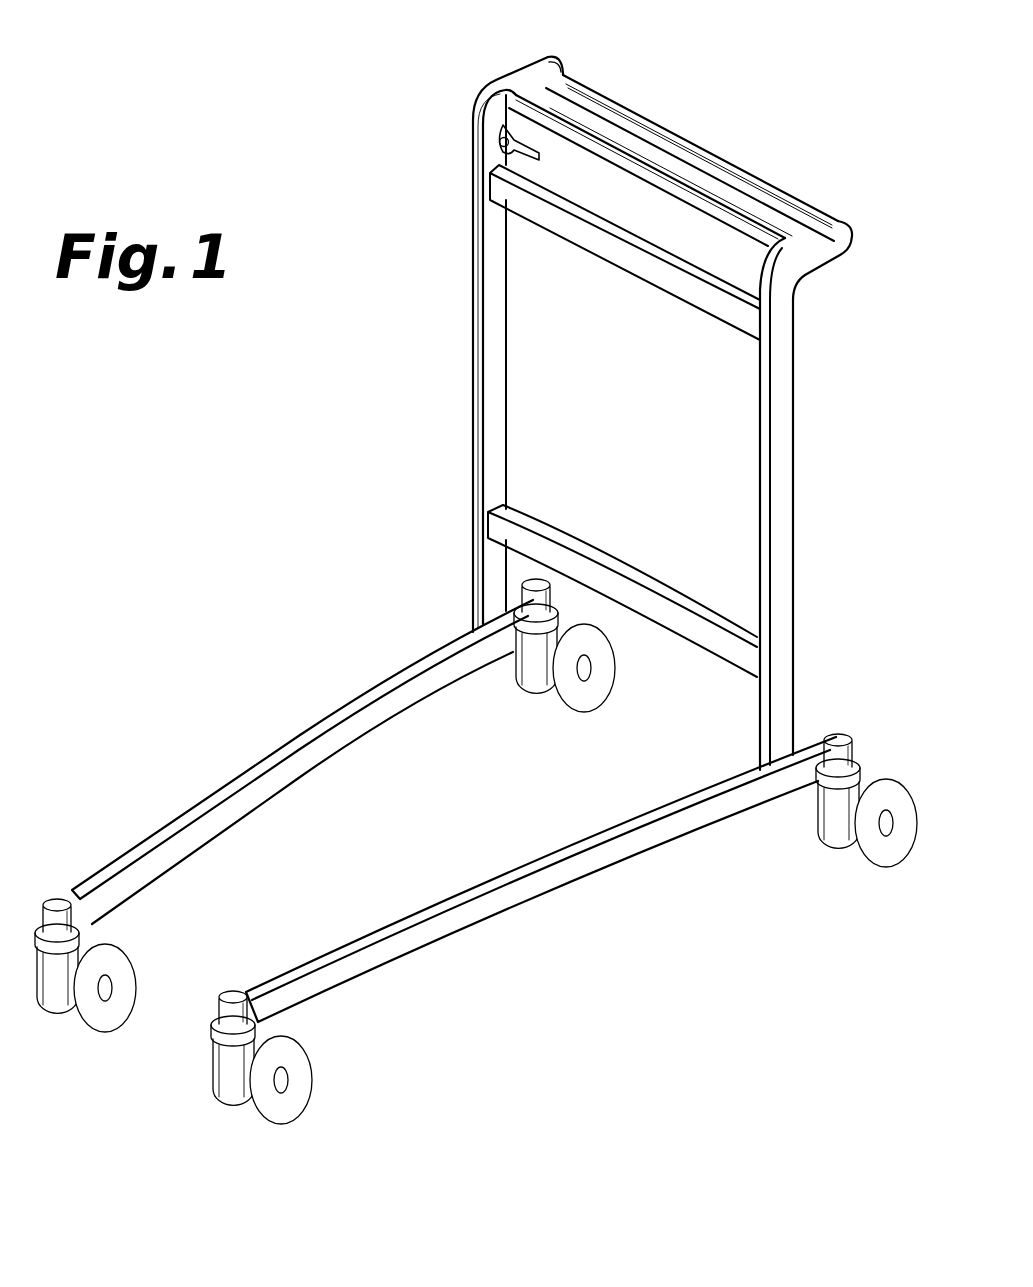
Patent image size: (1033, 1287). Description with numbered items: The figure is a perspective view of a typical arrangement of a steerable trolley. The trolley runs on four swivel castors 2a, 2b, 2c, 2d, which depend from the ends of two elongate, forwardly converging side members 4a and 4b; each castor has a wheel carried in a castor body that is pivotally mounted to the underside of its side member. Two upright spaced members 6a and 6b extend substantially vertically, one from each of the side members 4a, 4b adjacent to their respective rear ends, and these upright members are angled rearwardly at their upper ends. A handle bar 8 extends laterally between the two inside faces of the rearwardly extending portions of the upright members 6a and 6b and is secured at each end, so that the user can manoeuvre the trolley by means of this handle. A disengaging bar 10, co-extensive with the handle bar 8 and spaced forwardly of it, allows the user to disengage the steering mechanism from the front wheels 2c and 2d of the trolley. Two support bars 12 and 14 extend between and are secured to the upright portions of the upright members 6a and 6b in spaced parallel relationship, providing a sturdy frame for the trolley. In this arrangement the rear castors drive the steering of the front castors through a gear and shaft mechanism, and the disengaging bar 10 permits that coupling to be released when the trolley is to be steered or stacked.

The swivel castor 2a is at (863, 847).
The swivel castor 2b is at (602, 673).
The swivel castor 2c is at (118, 970).
The swivel castor 2d is at (298, 1087).
The side member 4a is at (483, 915).
The side member 4b is at (293, 775).
The upright spaced member 6a is at (790, 488).
The upright spaced member 6b is at (500, 462).
The handle bar 8 is at (700, 155).
The disengaging bar 10 is at (567, 122).
The support bar 12 is at (667, 277).
The support bar 14 is at (602, 572).